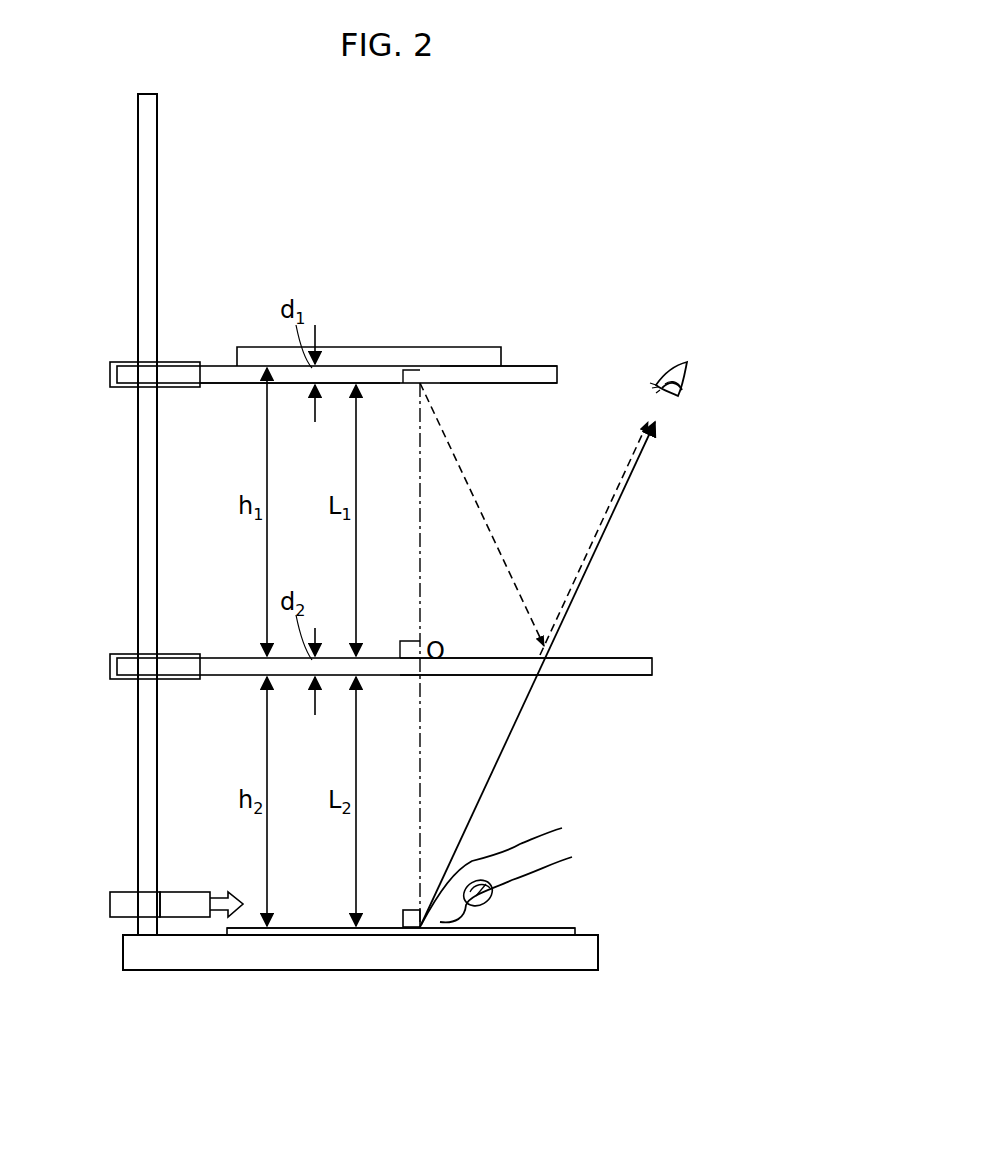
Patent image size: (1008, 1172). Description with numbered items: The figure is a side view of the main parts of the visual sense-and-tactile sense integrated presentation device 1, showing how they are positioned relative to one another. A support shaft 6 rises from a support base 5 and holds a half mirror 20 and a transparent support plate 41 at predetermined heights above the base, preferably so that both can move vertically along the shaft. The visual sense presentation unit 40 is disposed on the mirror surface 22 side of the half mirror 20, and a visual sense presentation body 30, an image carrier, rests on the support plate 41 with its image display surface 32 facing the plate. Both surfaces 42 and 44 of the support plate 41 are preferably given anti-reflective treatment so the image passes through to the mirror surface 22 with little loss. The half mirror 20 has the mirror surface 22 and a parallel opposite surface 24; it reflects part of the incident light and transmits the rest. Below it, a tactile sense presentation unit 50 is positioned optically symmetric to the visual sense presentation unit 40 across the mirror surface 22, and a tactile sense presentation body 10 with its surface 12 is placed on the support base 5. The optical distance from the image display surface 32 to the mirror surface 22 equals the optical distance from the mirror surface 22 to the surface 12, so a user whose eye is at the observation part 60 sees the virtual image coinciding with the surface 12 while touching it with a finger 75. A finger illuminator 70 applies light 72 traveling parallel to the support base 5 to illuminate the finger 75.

The visual sense-and-tactile sense integrated presentation device 1 is at (85, 305).
The support base 5 is at (598, 952).
The support shaft 6 is at (138, 140).
The tactile sense presentation body 10 is at (573, 930).
The surface of the tactile sense presentation body 12 is at (562, 926).
The half mirror 20 is at (652, 664).
The mirror surface 22 is at (603, 657).
The opposite surface 24 is at (603, 677).
The visual sense presentation body 30 is at (372, 346).
The image display surface 32 is at (480, 372).
The visual sense presentation unit 40 is at (502, 318).
The support plate 41 is at (218, 384).
The surface of the support plate 42 is at (543, 365).
The lower surface of the support plate 44 is at (542, 386).
The tactile sense presentation unit 50 is at (318, 902).
The observation part 60 is at (700, 376).
The finger illuminator 70 is at (178, 892).
The light 72 is at (224, 892).
The finger 75 is at (446, 912).